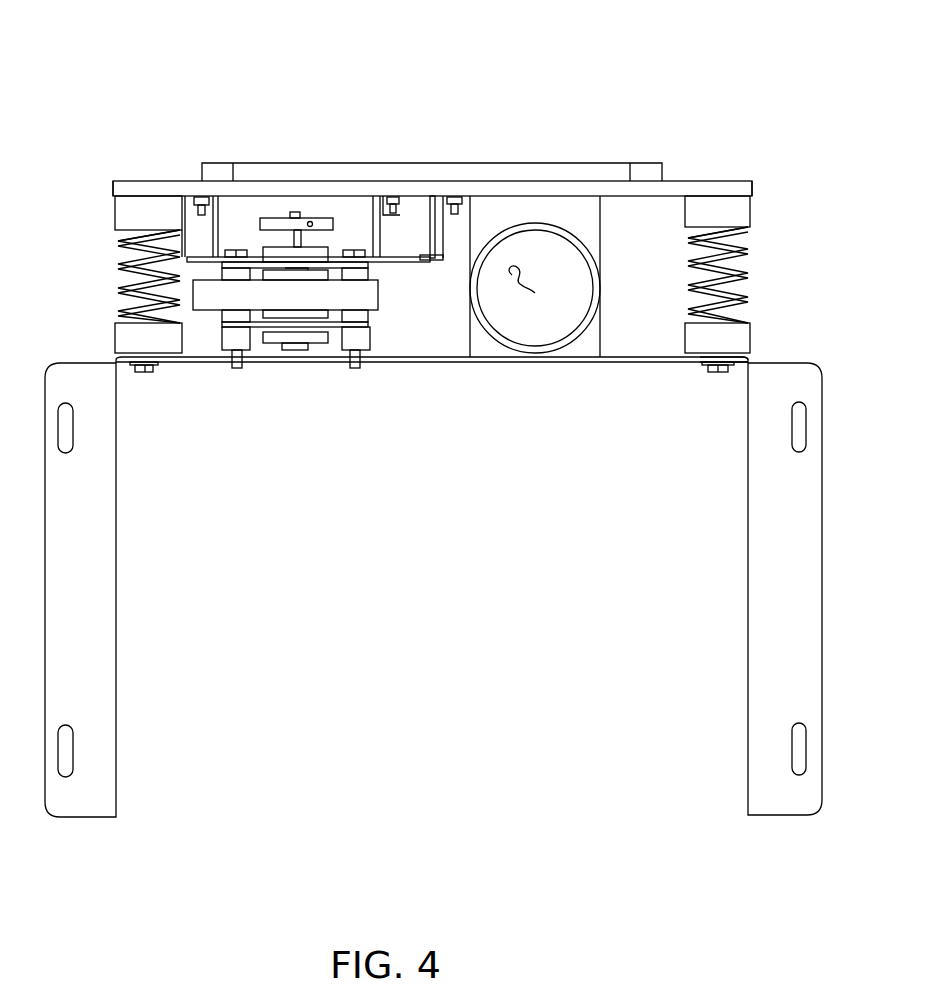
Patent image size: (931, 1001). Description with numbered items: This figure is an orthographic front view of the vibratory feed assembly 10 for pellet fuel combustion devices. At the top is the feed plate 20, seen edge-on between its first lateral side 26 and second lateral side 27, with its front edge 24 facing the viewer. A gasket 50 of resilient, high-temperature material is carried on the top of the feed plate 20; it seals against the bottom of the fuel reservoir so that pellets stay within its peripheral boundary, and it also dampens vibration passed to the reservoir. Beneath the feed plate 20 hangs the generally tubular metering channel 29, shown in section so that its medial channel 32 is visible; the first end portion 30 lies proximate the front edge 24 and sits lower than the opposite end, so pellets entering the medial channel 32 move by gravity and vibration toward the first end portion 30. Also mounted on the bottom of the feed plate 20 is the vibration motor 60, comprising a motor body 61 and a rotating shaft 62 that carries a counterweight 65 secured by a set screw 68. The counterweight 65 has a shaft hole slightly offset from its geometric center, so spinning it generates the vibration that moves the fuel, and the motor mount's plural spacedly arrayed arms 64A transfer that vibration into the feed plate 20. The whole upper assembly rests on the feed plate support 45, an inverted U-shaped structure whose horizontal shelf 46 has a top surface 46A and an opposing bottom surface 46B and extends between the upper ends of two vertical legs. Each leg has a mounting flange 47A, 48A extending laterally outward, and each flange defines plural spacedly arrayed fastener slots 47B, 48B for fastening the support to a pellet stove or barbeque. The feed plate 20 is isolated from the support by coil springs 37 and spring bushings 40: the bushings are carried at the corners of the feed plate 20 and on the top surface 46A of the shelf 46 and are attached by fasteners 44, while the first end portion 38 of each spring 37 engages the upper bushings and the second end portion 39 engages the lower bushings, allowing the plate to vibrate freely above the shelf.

The vibratory feed assembly 10 is at (449, 76).
The feed plate 20 is at (157, 172).
The front edge 24 is at (492, 190).
The first lateral side 26 is at (752, 182).
The second lateral side 27 is at (112, 185).
The metering channel 29 is at (597, 260).
The first end portion 30 is at (502, 342).
The medial channel 32 is at (538, 288).
The springs 37 is at (750, 268).
The first end portion 38 is at (750, 228).
The second end portion 39 is at (750, 310).
The spring bushings 40 is at (735, 207).
The fasteners 44 is at (141, 373).
The feed plate support 45 is at (140, 481).
The horizontal shelf 46 is at (400, 362).
The top surface 46A is at (667, 357).
The bottom surface 46B is at (666, 362).
The mounting flange 47A is at (770, 560).
The fastener slots 47B is at (795, 435).
The mounting flange 48A is at (90, 620).
The fastener slots 48B is at (70, 445).
The gasket 50 is at (605, 170).
The vibration motor 60 is at (318, 362).
The motor body 61 is at (363, 295).
The rotating shaft 62 is at (297, 238).
The arms 64A is at (390, 196).
The counterweight 65 is at (265, 217).
The set screw 68 is at (314, 222).